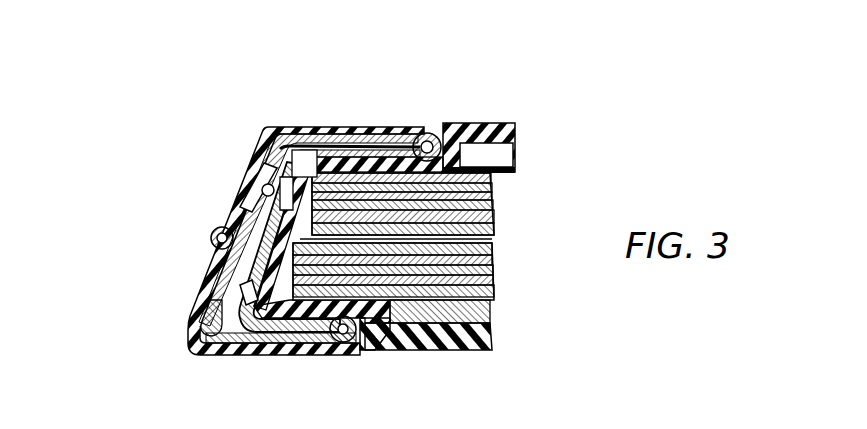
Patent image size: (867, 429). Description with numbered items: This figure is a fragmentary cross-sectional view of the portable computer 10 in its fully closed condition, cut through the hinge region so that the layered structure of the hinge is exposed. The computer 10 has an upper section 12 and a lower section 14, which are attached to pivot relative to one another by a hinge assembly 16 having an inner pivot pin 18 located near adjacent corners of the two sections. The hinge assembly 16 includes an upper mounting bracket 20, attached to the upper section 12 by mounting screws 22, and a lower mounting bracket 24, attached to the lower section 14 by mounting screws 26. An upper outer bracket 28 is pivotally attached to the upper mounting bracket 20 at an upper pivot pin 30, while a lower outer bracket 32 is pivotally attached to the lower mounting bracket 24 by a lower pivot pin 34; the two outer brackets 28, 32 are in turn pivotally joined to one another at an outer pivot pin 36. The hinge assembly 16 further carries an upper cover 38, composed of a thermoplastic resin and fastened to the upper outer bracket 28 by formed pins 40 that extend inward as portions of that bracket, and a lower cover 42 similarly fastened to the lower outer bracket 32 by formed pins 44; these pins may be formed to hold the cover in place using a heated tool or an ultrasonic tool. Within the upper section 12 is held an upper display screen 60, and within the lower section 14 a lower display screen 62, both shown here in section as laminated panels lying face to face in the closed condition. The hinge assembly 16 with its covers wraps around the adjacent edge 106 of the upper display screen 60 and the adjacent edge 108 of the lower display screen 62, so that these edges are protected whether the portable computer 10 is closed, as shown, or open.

The portable computer 10 is at (378, 76).
The upper section 12 is at (503, 120).
The lower section 14 is at (458, 352).
The hinge assembly 16 is at (245, 353).
The inner pivot pin 18 is at (285, 218).
The upper mounting bracket 20 is at (289, 128).
The mounting screws 22 is at (262, 140).
The lower mounting bracket 24 is at (205, 354).
The mounting screws 26 is at (232, 278).
The upper outer bracket 28 is at (402, 127).
The upper pivot pin 30 is at (432, 130).
The lower outer bracket 32 is at (338, 344).
The lower pivot pin 34 is at (370, 348).
The outer pivot pin 36 is at (210, 236).
The upper cover 38 is at (325, 128).
The formed pins 40 is at (245, 178).
The lower cover 42 is at (297, 346).
The formed pins 44 is at (192, 320).
The upper display screen 60 is at (494, 200).
The lower display screen 62 is at (494, 284).
The adjacent edge 106 is at (262, 195).
The adjacent edge 108 is at (240, 293).